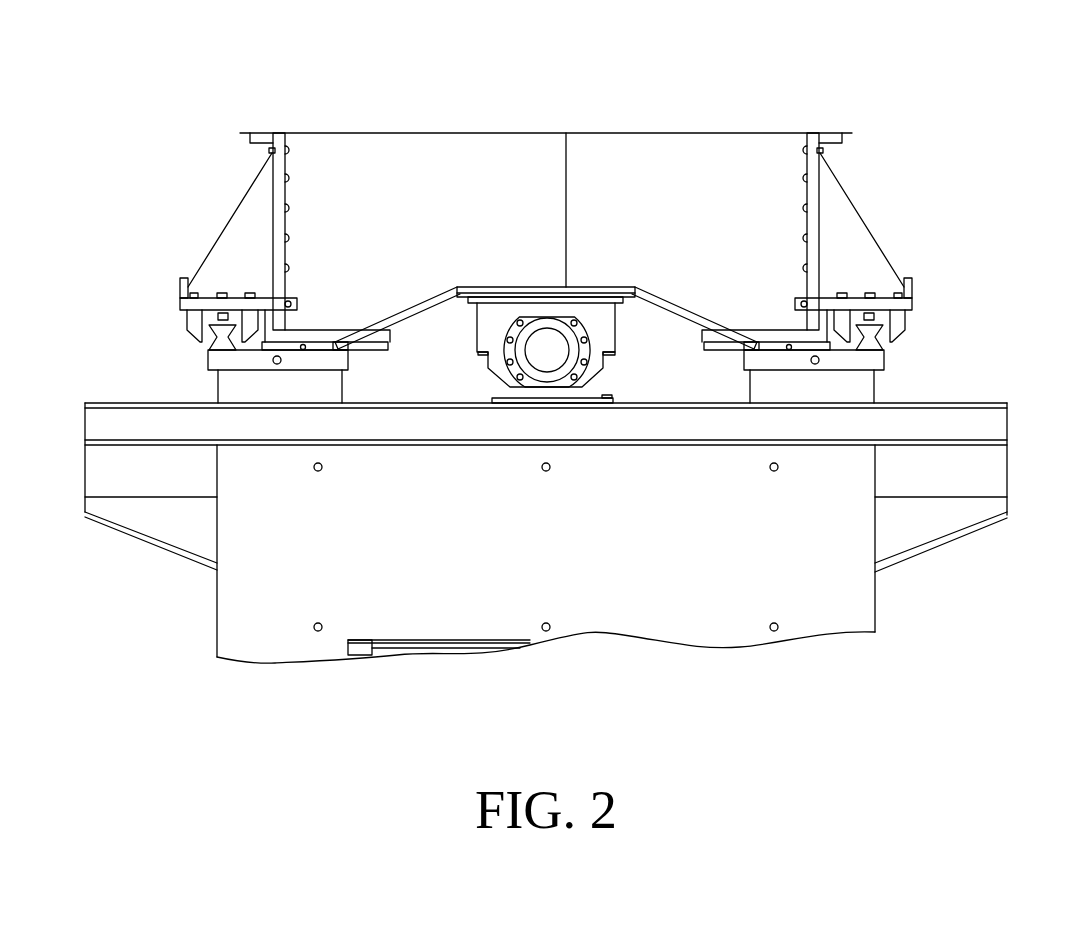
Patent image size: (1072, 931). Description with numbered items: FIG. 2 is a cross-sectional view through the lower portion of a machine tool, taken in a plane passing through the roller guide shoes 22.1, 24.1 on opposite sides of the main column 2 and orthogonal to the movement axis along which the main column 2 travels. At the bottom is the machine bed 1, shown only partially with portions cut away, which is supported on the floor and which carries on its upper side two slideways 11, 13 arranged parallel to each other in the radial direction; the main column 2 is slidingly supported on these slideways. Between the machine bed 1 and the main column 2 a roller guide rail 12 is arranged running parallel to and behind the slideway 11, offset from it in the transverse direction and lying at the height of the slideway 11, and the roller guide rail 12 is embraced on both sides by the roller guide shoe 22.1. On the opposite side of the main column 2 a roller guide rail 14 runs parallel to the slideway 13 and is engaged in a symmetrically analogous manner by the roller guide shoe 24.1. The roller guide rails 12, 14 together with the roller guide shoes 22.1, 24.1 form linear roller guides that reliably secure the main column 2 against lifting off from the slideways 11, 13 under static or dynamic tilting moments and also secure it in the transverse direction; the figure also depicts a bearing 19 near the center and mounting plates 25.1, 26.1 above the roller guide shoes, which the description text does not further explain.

The machine bed 1 is at (288, 617).
The main column 2 is at (371, 150).
The slideway 11 is at (308, 350).
The roller guide rail 12 is at (222, 346).
The slideway 13 is at (780, 350).
The roller guide rail 14 is at (885, 345).
The bearing 19 is at (548, 350).
The roller guide shoe 22.1 is at (195, 322).
The roller guide shoe 24.1 is at (905, 322).
The left mounting plate 25.1 is at (185, 312).
The right mounting plate 26.1 is at (907, 312).